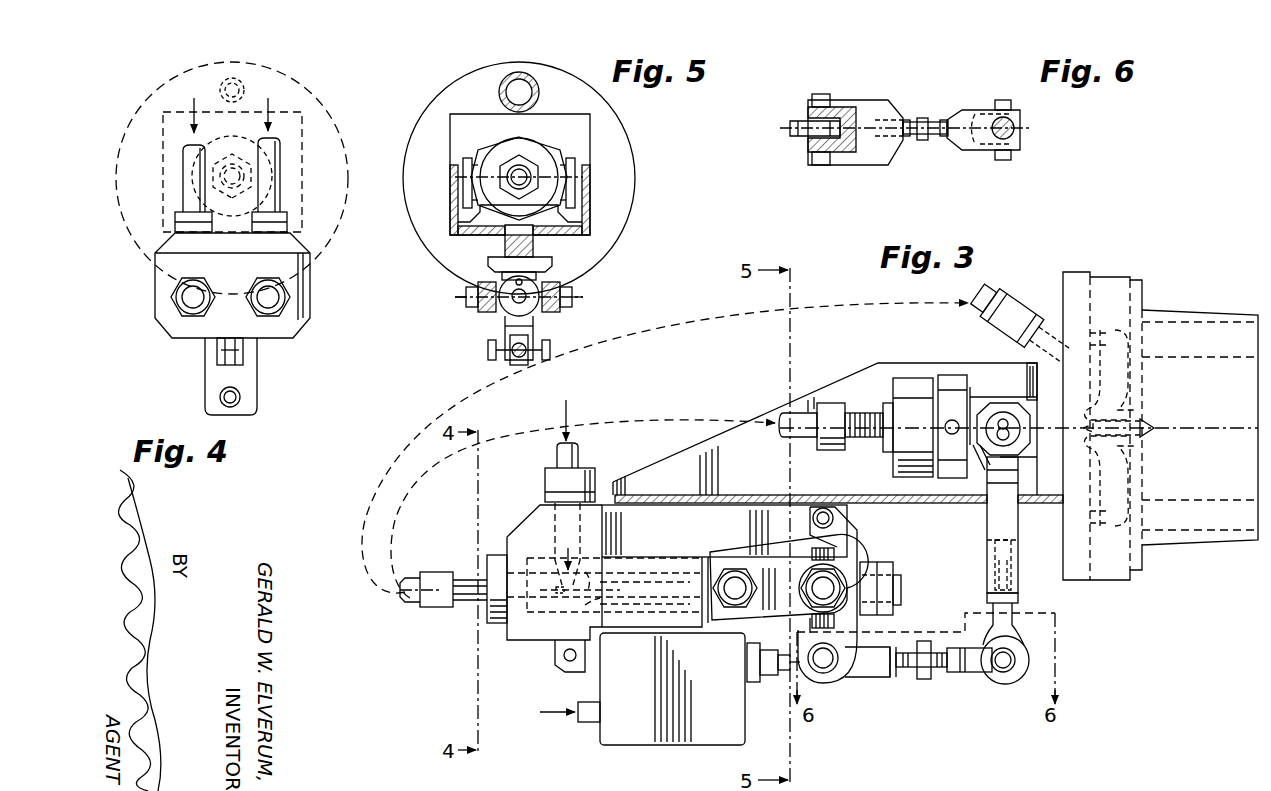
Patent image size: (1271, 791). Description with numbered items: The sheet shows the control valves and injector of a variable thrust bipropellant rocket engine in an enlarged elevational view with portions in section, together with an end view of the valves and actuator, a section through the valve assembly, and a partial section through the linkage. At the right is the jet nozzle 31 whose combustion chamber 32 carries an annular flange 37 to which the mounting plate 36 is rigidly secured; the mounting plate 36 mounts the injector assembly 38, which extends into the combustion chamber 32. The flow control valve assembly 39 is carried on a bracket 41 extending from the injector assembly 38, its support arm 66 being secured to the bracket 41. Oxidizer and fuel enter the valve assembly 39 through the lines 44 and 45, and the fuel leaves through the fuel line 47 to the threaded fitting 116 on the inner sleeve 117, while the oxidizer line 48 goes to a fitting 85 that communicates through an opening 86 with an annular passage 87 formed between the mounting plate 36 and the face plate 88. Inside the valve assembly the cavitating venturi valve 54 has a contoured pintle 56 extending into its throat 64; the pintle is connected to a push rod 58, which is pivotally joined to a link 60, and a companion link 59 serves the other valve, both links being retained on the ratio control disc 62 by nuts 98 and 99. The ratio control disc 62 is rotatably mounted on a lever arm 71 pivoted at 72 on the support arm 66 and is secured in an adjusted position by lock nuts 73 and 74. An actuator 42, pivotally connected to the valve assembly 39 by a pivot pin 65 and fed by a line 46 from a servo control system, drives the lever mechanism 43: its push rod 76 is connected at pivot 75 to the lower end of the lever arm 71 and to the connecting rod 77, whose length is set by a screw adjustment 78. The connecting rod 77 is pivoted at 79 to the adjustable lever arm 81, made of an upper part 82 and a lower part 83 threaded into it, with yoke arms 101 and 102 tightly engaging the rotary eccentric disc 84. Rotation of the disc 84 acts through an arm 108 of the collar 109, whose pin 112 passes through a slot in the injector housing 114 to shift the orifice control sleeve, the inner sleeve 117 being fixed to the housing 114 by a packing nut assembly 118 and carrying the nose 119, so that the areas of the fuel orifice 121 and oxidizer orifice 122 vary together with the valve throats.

In FIG. 4, the jet nozzle 31 is at (150, 106).
In FIG. 3, the jet nozzle 31 is at (1220, 310).
In FIG. 3, the combustion chamber 32 is at (1246, 440).
In FIG. 3, the mounting plate 36 is at (1078, 272).
In FIG. 3, the annular flange 37 is at (1105, 277).
In FIG. 3, the injector assembly 38 is at (918, 355).
In FIG. 4, the flow control valve assembly 39 is at (150, 278).
In FIG. 3, the flow control valve assembly 39 is at (528, 652).
In FIG. 5, the bracket 41 is at (450, 148).
In FIG. 3, the bracket 41 is at (675, 466).
In FIG. 4, the actuator 42 is at (257, 390).
In FIG. 3, the actuator 42 is at (723, 697).
In FIG. 3, the lever mechanism 43 is at (1070, 650).
In FIG. 4, the line 44 is at (280, 168).
In FIG. 3, the line 44 is at (557, 440).
In FIG. 4, the line 45 is at (183, 168).
In FIG. 4, the line 46 is at (220, 398).
In FIG. 3, the line 46 is at (582, 722).
In FIG. 4, the fuel line 47 is at (285, 306).
In FIG. 5, the fuel line 47 is at (514, 168).
In FIG. 3, the fuel line 47 is at (688, 432).
In FIG. 4, the oxidizer line 48 is at (176, 297).
In FIG. 5, the oxidizer line 48 is at (505, 85).
In FIG. 3, the oxidizer line 48 is at (702, 330).
In FIG. 3, the cavitating venturi valve 54 is at (552, 576).
In FIG. 3, the contoured pintle 56 is at (588, 576).
In FIG. 3, the push rod 58 is at (750, 580).
In FIG. 5, the link 59 is at (490, 282).
In FIG. 5, the link 60 is at (552, 282).
In FIG. 3, the link 60 is at (805, 612).
In FIG. 5, the ratio control disc 62 is at (505, 310).
In FIG. 3, the ratio control disc 62 is at (812, 572).
In FIG. 3, the throat 64 is at (562, 594).
In FIG. 4, the pivot pin 65 is at (217, 350).
In FIG. 3, the pivot pin 65 is at (568, 668).
In FIG. 3, the support arm 66 is at (718, 535).
In FIG. 5, the lever arm 71 is at (533, 332).
In FIG. 6, the lever arm 71 is at (806, 112).
In FIG. 3, the lever arm 71 is at (862, 540).
In FIG. 3, the pivot 72 is at (833, 518).
In FIG. 3, the lock nut 73 is at (872, 572).
In FIG. 3, the lock nut 74 is at (898, 578).
In FIG. 5, the pivot 75 is at (488, 352).
In FIG. 6, the pivot 75 is at (822, 93).
In FIG. 3, the pivot 75 is at (826, 676).
In FIG. 6, the push rod 76 is at (792, 134).
In FIG. 3, the push rod 76 is at (792, 680).
In FIG. 5, the connecting rod 77 is at (545, 348).
In FIG. 6, the connecting rod 77 is at (868, 104).
In FIG. 3, the connecting rod 77 is at (872, 676).
In FIG. 6, the screw adjustment 78 is at (922, 117).
In FIG. 3, the screw adjustment 78 is at (924, 676).
In FIG. 6, the pivot 79 is at (1008, 152).
In FIG. 3, the pivot 79 is at (1000, 676).
In FIG. 3, the adjustable lever arm 81 is at (985, 566).
In FIG. 3, the upper part 82 is at (987, 514).
In FIG. 6, the lower part 83 is at (1015, 130).
In FIG. 3, the lower part 83 is at (1015, 616).
In FIG. 3, the rotary eccentric disc 84 is at (1001, 410).
In FIG. 5, the fitting 85 is at (535, 80).
In FIG. 3, the fitting 85 is at (1000, 300).
In FIG. 3, the opening 86 is at (1102, 350).
In FIG. 3, the annular passage 87 is at (1130, 350).
In FIG. 3, the face plate 88 is at (1125, 395).
In FIG. 5, the nut 98 is at (466, 297).
In FIG. 5, the nut 99 is at (572, 297).
In FIG. 5, the arm 101 is at (462, 195).
In FIG. 5, the arm 102 is at (575, 195).
In FIG. 3, the arm 108 is at (978, 468).
In FIG. 5, the collar 109 is at (492, 150).
In FIG. 3, the collar 109 is at (952, 375).
In FIG. 3, the pin 112 is at (946, 433).
In FIG. 3, the injector housing 114 is at (977, 387).
In FIG. 3, the threaded fitting 116 is at (832, 403).
In FIG. 3, the inner sleeve 117 is at (872, 440).
In FIG. 5, the packing nut assembly 118 is at (540, 150).
In FIG. 3, the packing nut assembly 118 is at (906, 378).
In FIG. 3, the nose 119 is at (1156, 430).
In FIG. 3, the fuel orifice 121 is at (1137, 426).
In FIG. 3, the oxidizer orifice 122 is at (1112, 450).